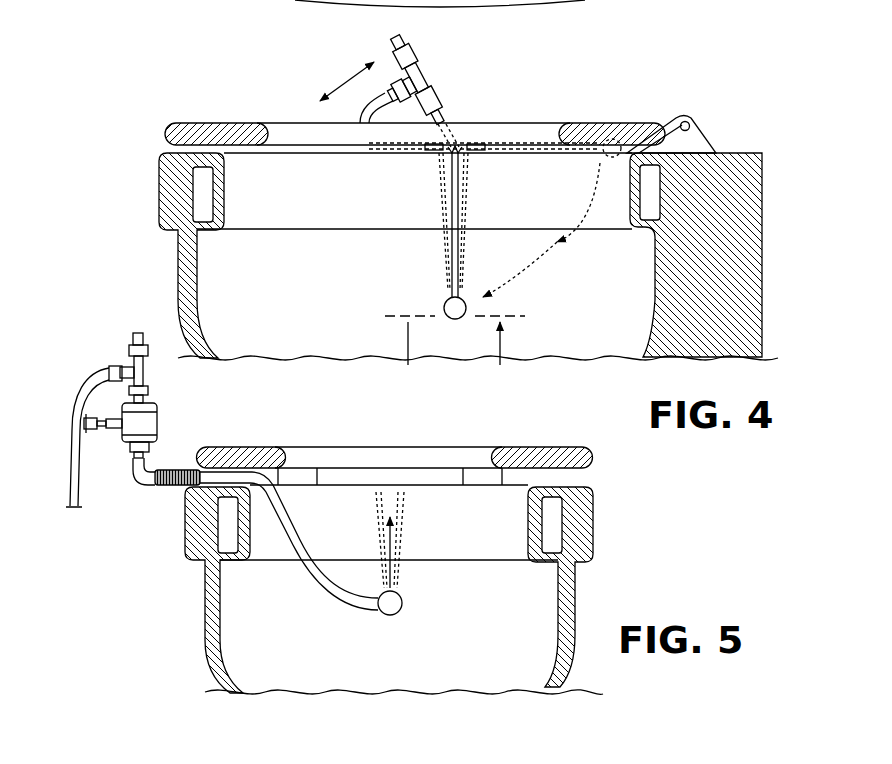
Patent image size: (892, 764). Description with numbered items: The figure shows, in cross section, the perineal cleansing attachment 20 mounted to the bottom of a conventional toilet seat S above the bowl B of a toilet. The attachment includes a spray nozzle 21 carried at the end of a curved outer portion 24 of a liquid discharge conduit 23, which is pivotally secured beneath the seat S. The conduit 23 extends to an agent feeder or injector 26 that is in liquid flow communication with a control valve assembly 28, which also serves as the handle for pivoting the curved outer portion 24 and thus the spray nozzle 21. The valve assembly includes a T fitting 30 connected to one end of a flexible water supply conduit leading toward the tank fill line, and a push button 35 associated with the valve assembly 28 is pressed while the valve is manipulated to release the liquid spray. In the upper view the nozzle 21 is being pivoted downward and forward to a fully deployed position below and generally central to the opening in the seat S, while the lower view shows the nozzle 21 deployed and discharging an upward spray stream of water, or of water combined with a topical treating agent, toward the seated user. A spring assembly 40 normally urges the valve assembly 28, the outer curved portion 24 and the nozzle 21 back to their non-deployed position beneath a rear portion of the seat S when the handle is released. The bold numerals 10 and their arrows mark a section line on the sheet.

In FIG. 4, the section line indicator 10 is at (455, 355).
In FIG. 5, the perineal cleansing attachment 20 is at (157, 500).
In FIG. 4, the spray nozzle 21 is at (463, 300).
In FIG. 5, the spray nozzle 21 is at (393, 613).
In FIG. 4, the liquid discharge conduit 23 is at (444, 200).
In FIG. 5, the liquid discharge conduit 23 is at (302, 578).
In FIG. 5, the curved outer portion 24 is at (353, 607).
In FIG. 5, the agent feeder or injector 26 is at (157, 423).
In FIG. 4, the control valve assembly 28 is at (430, 66).
In FIG. 5, the control valve assembly 28 is at (152, 369).
In FIG. 5, the T fitting 30 is at (130, 360).
In FIG. 4, the push button 35 is at (406, 40).
In FIG. 5, the push button 35 is at (130, 338).
In FIG. 5, the spring assembly 40 is at (148, 486).
In FIG. 4, the toilet seat S is at (612, 118).
In FIG. 5, the toilet seat S is at (552, 447).
In FIG. 4, the bowl B is at (178, 272).
In FIG. 5, the bowl B is at (580, 603).